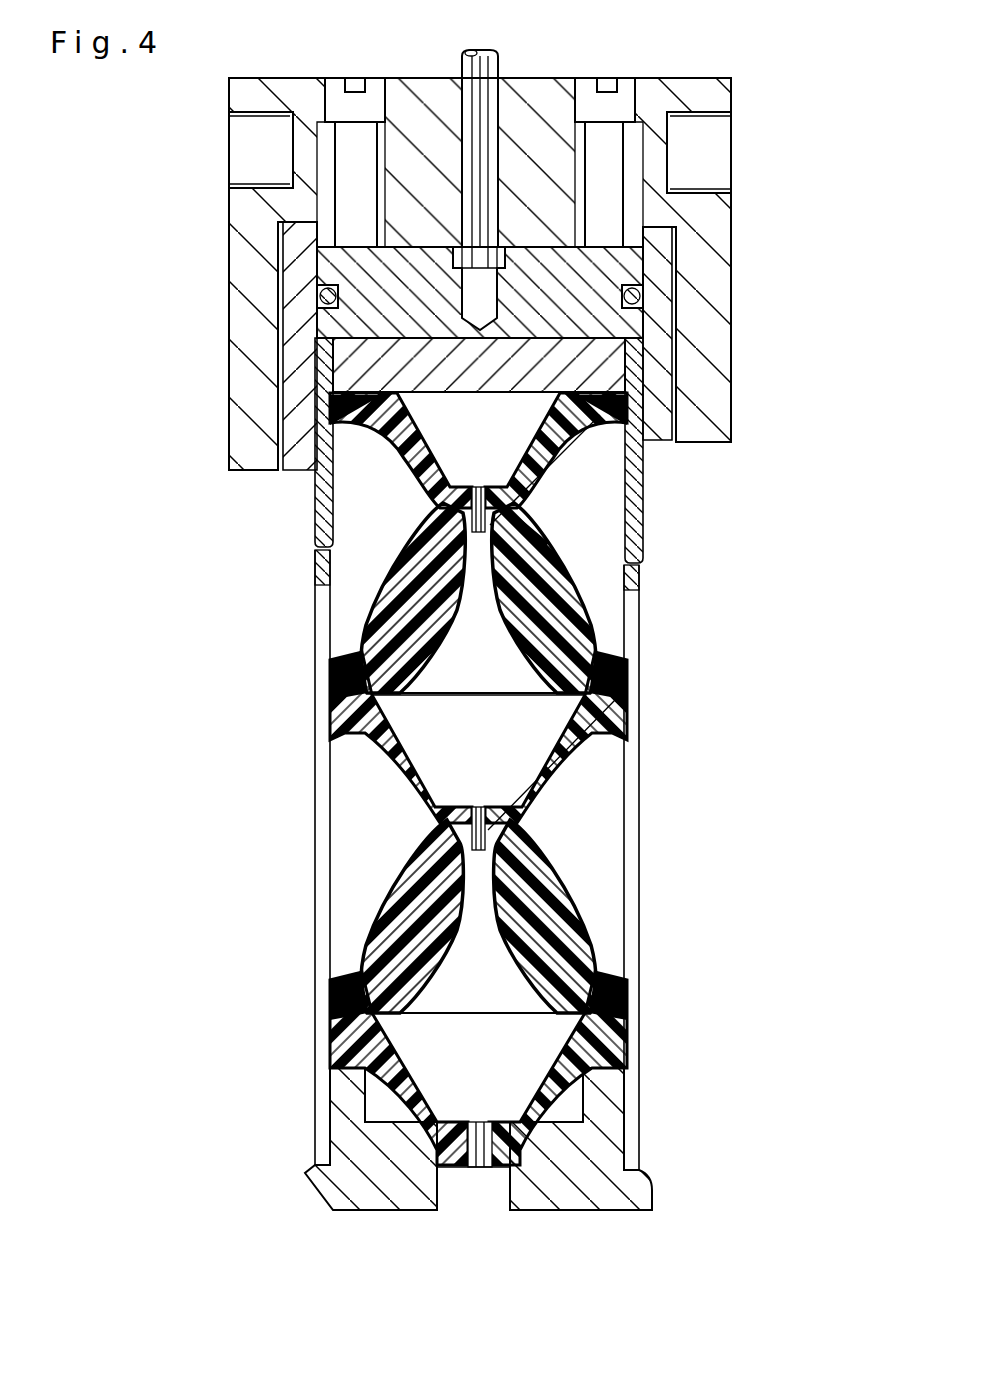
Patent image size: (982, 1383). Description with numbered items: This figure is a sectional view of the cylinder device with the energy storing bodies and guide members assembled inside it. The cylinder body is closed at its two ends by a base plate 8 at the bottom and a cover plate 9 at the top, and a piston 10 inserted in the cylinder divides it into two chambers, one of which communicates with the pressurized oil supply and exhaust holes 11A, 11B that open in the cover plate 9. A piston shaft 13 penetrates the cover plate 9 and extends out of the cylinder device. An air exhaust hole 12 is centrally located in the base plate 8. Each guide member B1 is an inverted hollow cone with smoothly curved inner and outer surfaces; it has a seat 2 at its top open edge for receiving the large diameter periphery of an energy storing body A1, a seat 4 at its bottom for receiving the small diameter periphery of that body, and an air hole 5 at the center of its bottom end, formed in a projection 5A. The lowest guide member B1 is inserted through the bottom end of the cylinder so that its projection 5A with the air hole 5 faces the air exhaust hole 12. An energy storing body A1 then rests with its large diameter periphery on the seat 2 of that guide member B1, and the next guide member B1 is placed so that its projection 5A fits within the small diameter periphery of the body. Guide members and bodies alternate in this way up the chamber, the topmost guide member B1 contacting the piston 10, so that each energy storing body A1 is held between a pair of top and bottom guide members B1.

The seat 2 is at (608, 664).
The seat 4 is at (522, 486).
The air hole 5 is at (545, 538).
The projection 5A is at (530, 512).
The base plate 8 is at (617, 1210).
The cover plate 9 is at (722, 245).
The piston 10 is at (605, 370).
The pressurized oil supply and exhaust hole 11A is at (722, 168).
The pressurized oil supply and exhaust hole 11B is at (258, 134).
The air exhaust hole 12 is at (480, 1212).
The piston shaft 13 is at (492, 51).
The energy storing body A1 is at (570, 625).
The guide member B1 is at (600, 715).